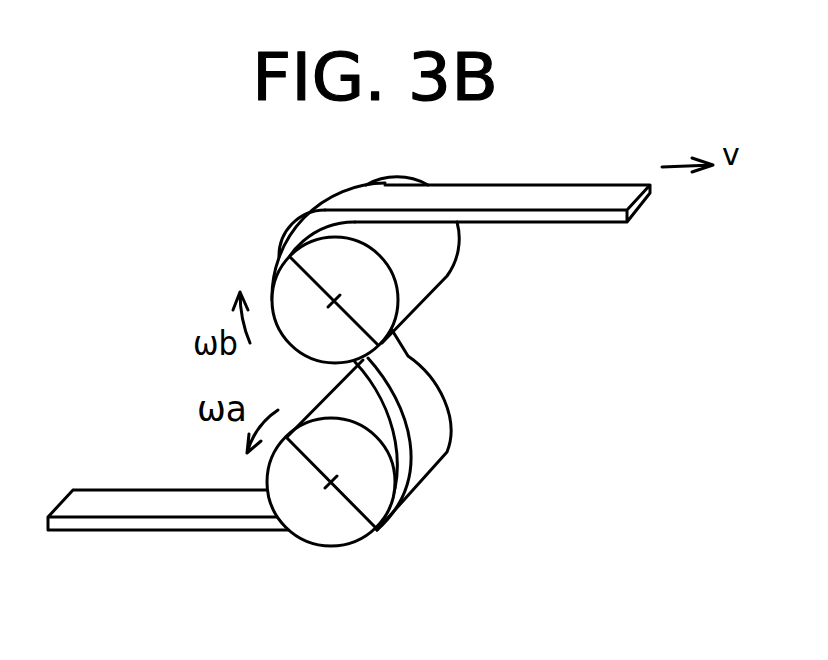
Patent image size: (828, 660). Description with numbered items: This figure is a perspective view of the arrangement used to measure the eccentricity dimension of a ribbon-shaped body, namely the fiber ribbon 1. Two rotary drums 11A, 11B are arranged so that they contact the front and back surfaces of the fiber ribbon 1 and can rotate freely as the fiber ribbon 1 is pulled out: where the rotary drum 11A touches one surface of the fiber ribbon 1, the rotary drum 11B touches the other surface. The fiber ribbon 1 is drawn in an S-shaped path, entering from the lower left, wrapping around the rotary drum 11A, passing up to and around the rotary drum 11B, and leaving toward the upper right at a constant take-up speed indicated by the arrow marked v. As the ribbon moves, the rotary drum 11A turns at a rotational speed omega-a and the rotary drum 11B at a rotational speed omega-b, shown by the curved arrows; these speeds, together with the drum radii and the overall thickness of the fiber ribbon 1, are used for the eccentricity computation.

The fiber ribbon 1 is at (115, 507).
The rotary drum 11A is at (330, 524).
The rotary drum 11B is at (425, 245).